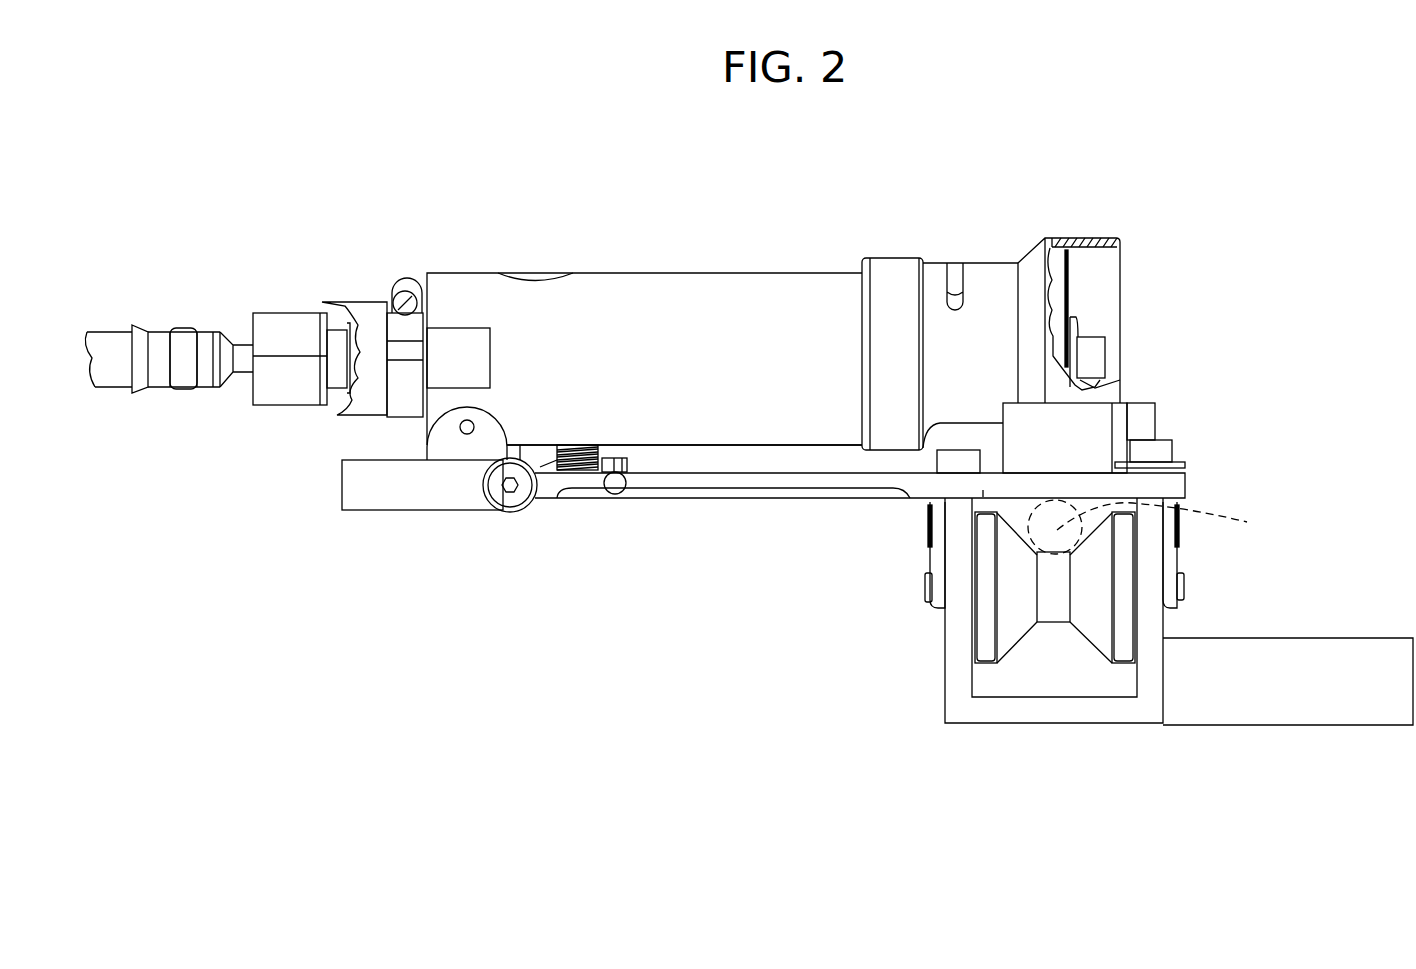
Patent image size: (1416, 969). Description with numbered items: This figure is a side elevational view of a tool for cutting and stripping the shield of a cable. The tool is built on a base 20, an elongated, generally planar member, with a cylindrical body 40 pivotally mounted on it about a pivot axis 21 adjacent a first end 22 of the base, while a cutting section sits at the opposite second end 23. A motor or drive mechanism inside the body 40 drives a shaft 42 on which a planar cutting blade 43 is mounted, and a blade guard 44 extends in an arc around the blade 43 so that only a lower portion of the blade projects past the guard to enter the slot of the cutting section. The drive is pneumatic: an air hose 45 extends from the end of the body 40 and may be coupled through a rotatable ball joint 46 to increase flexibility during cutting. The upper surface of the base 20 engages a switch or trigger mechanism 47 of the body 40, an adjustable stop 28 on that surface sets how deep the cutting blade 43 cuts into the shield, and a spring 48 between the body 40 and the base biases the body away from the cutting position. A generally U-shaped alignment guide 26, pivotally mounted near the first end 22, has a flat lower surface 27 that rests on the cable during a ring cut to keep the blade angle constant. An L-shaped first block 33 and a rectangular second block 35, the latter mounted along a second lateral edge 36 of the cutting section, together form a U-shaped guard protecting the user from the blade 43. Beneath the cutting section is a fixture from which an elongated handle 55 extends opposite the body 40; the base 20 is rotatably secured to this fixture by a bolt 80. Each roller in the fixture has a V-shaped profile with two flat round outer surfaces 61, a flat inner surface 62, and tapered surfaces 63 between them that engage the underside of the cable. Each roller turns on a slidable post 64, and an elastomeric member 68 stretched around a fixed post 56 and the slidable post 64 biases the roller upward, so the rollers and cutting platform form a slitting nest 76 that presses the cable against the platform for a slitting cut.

The base 20 is at (722, 515).
The pivot axis 21 is at (460, 428).
The first end 22 is at (470, 522).
The second end 23 is at (1200, 487).
The alignment guide 26 is at (435, 488).
The lower surface 27 is at (367, 512).
The adjustable stop 28 is at (620, 467).
The first block 33 is at (1147, 422).
The second block 35 is at (1083, 437).
The second lateral edge 36 is at (985, 490).
The cylindrical body 40 is at (688, 250).
The shaft 42 is at (1092, 357).
The cutting blade 43 is at (1065, 267).
The blade guard 44 is at (1060, 245).
The air hose 45 is at (143, 330).
The rotatable ball joint 46 is at (280, 330).
The trigger mechanism 47 is at (543, 467).
The spring 48 is at (583, 467).
The handle 55 is at (1322, 697).
The fixed post 56 is at (935, 520).
The outer surfaces 61 is at (990, 652).
The inner surface 62 is at (1053, 622).
The tapered surface 63 is at (1107, 633).
The slidable post 64 is at (925, 590).
The elastomeric member 68 is at (940, 548).
The slitting nest 76 is at (1156, 527).
The bolt 80 is at (1157, 453).